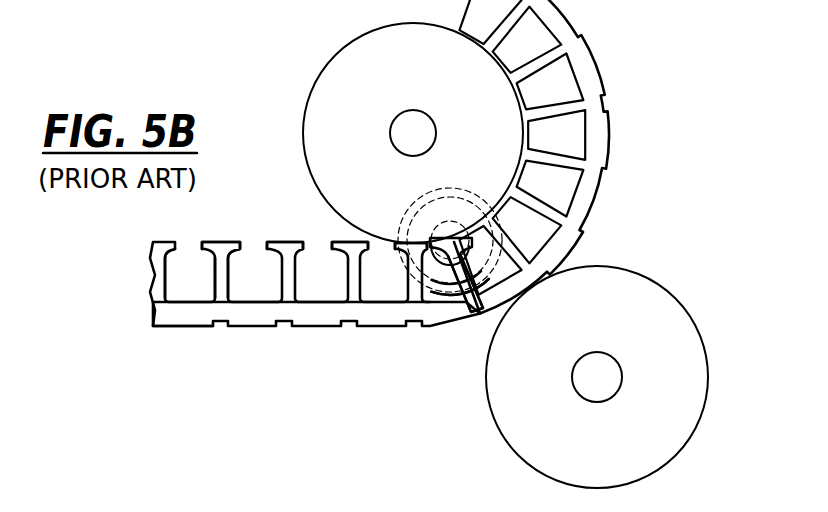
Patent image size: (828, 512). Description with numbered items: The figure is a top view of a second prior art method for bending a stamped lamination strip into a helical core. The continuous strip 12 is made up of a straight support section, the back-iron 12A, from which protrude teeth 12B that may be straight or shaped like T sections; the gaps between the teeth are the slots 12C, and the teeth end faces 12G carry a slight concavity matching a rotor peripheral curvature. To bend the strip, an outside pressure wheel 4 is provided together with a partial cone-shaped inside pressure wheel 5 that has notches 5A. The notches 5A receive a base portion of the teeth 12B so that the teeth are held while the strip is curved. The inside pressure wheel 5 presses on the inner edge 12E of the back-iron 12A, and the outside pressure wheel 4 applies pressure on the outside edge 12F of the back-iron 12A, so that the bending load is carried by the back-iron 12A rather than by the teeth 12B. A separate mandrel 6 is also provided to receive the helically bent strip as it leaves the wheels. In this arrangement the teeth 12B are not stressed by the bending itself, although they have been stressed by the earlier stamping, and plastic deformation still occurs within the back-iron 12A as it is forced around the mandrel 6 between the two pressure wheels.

The outside pressure wheel 4 is at (645, 333).
The inside pressure wheel 5 is at (400, 282).
The notches 5A is at (438, 300).
The mandrel 6 is at (354, 82).
The continuous strip 12 is at (183, 318).
The back-iron 12A is at (360, 313).
The teeth 12B is at (285, 243).
The slots 12C is at (190, 263).
The inner edge of the back-iron 12E is at (392, 262).
The outside edge of the back-iron 12F is at (475, 300).
The teeth end faces 12G is at (347, 238).